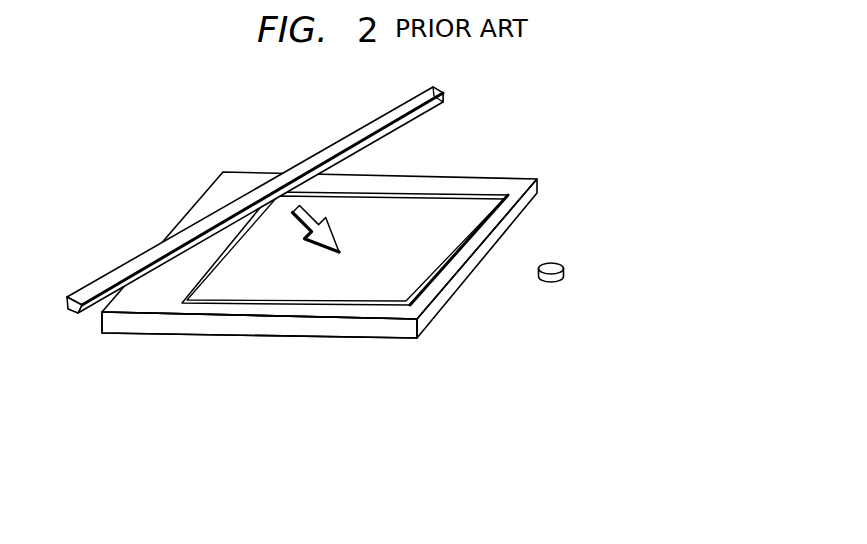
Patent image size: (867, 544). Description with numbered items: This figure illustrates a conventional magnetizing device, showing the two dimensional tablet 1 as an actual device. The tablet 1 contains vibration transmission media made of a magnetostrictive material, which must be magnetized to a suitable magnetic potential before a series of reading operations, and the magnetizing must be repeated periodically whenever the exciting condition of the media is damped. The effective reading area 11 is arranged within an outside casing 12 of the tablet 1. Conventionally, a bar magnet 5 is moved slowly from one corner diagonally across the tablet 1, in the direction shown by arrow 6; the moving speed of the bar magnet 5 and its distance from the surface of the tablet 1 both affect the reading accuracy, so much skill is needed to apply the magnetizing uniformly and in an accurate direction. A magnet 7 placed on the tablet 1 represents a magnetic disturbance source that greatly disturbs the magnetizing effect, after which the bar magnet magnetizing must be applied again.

The two dimensional tablet 1 is at (507, 172).
The bar magnet 5 is at (343, 144).
The arrow 6 is at (328, 237).
The magnet 7 is at (420, 248).
The effective reading area 11 is at (345, 285).
The outside casing 12 is at (131, 325).